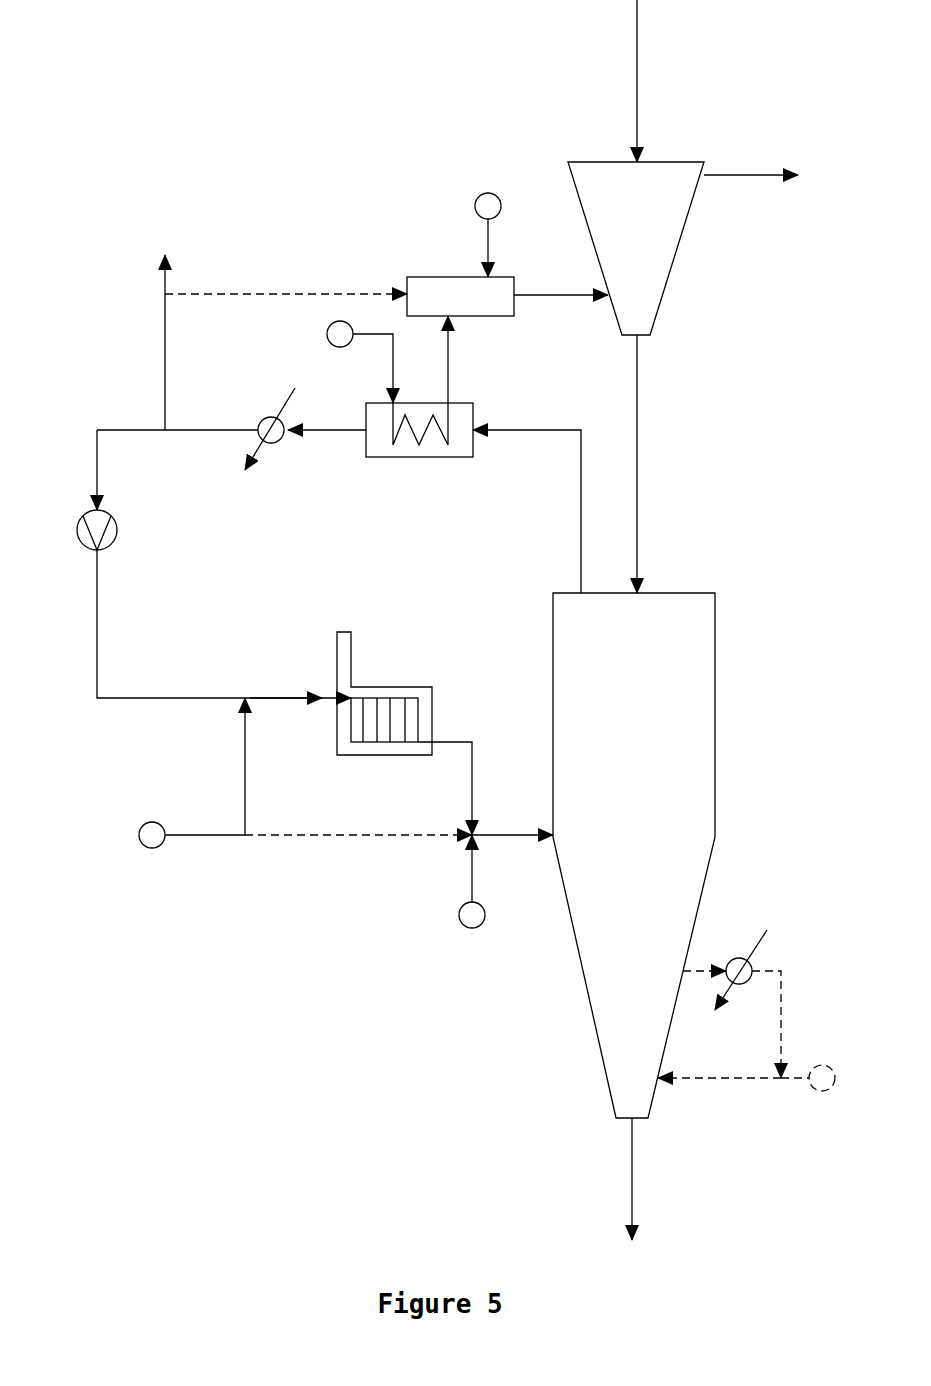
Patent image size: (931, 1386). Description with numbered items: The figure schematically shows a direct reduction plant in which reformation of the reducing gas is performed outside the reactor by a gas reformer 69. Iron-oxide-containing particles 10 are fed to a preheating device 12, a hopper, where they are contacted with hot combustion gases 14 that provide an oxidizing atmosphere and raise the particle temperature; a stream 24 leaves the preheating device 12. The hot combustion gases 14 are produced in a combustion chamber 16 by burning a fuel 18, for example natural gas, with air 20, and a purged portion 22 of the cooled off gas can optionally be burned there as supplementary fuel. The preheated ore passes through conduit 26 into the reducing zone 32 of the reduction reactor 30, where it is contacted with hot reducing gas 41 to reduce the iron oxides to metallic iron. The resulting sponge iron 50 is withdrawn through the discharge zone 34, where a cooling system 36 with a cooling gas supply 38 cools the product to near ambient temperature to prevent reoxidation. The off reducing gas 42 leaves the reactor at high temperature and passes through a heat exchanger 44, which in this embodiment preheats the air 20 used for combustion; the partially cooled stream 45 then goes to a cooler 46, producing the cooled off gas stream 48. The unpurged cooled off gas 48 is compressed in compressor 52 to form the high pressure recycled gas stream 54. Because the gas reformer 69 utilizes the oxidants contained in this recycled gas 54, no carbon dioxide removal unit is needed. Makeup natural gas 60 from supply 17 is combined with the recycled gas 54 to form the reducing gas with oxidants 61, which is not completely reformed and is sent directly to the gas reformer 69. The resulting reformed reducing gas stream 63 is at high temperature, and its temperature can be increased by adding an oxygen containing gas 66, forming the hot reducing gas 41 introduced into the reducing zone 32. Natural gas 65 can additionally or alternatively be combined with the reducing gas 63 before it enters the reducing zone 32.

The iron-oxide-containing particles 10 is at (634, 50).
The preheating device 12 is at (580, 162).
The hot combustion gases 14 is at (542, 295).
The combustion chamber 16 is at (418, 277).
The natural gas supply 17 is at (160, 848).
The fuel 18 is at (476, 205).
The air 20 is at (327, 334).
The purged portion of cooled off gas 22 is at (165, 340).
The overhead product stream 24 is at (755, 175).
The conduit 26 is at (638, 468).
The reduction reactor 30 is at (716, 617).
The reducing zone 32 is at (660, 740).
The discharge zone 34 is at (660, 996).
The cooling system 36 is at (778, 970).
The cooling gas supply 38 is at (821, 1091).
The hot reducing gas 41 is at (524, 835).
The off reducing gas 42 is at (570, 430).
The heat exchanger 44 is at (392, 457).
The partially cooled off gas stream 45 is at (336, 430).
The cooler 46 is at (268, 418).
The cooled off gas stream 48 is at (205, 430).
The sponge iron 50 is at (632, 1168).
The compressor 52 is at (77, 528).
The high pressure recycled gas stream 54 is at (96, 600).
The makeup natural gas 60 is at (242, 768).
The reducing gas with oxidants 61 is at (300, 698).
The reformed reducing gas stream 63 is at (472, 742).
The natural gas 65 is at (365, 835).
The oxygen containing gas 66 is at (472, 928).
The gas reformer 69 is at (388, 687).